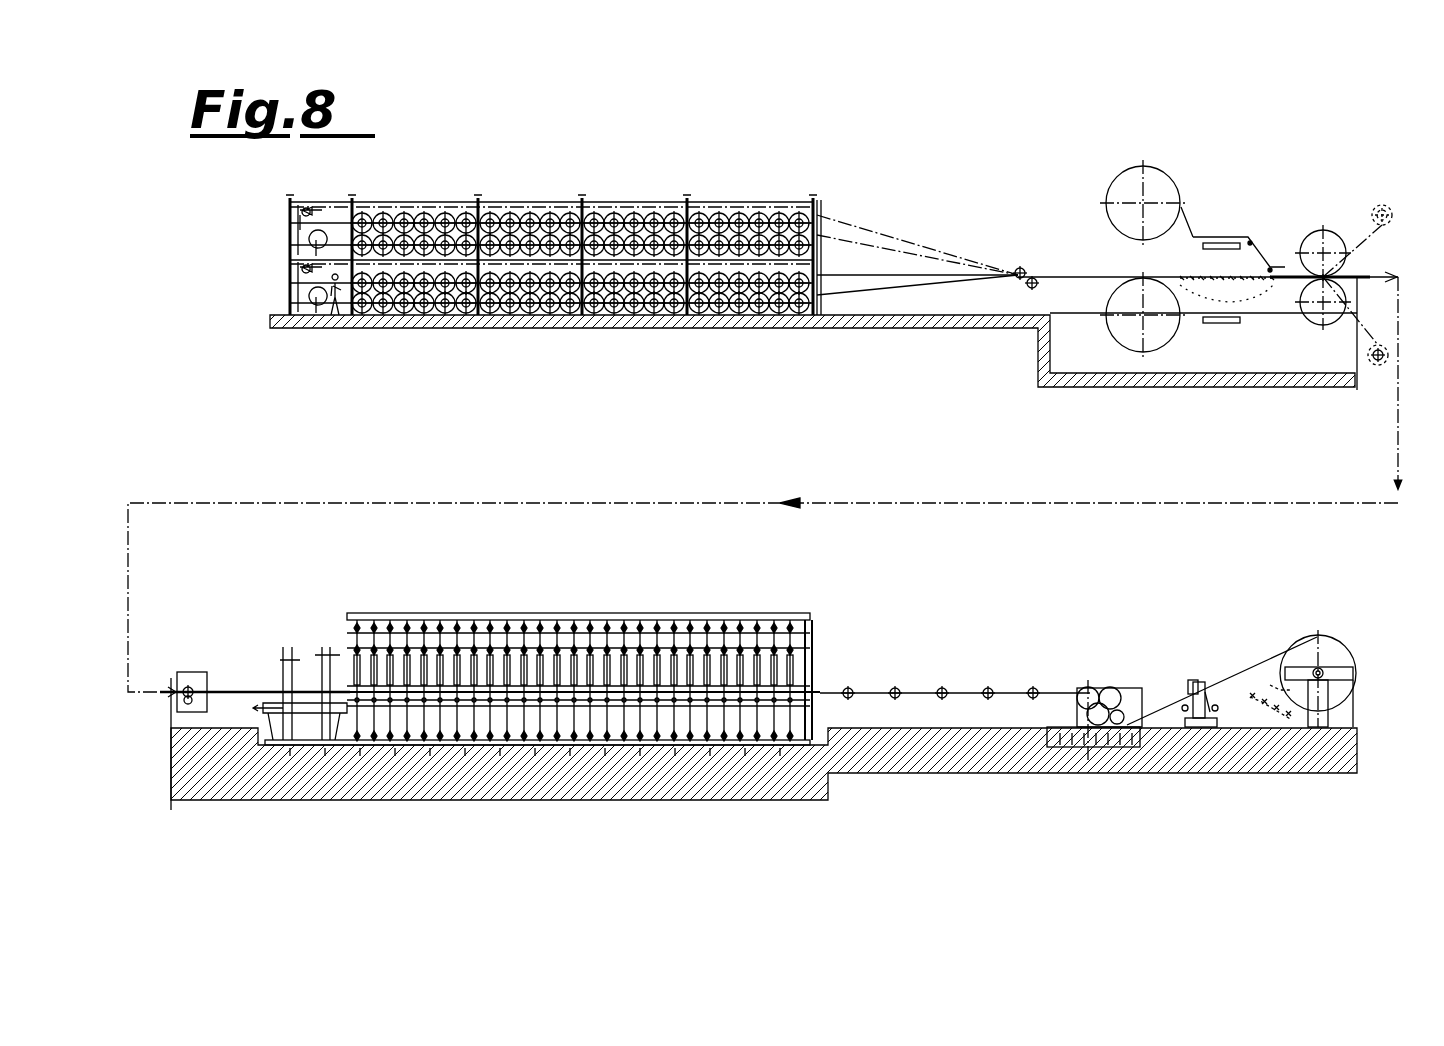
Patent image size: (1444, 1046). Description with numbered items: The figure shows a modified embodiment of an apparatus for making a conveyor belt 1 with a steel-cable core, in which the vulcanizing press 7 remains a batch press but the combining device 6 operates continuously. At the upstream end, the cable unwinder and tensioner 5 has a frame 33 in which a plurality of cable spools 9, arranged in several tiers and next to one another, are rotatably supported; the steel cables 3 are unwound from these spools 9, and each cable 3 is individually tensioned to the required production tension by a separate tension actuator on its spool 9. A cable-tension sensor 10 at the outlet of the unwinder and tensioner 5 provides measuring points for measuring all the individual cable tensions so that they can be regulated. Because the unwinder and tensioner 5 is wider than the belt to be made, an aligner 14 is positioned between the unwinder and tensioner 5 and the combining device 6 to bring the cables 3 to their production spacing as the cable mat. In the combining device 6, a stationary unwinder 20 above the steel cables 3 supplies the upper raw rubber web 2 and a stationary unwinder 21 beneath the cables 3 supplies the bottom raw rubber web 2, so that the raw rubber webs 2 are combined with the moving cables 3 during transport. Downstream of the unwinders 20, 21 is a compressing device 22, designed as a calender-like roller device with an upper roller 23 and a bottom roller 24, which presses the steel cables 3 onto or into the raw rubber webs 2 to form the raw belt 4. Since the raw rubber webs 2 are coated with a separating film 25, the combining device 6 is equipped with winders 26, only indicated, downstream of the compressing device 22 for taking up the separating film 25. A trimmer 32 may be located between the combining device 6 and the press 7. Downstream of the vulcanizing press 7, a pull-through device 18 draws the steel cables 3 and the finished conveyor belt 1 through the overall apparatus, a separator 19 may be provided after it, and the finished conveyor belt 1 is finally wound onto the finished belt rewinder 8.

The conveyor belt 1 is at (1240, 665).
The raw rubber web 2 is at (1193, 237).
The steel cable 3 is at (902, 278).
The raw belt 4 is at (232, 686).
The cable unwinder and tensioner 5 is at (672, 155).
The combining device 6 is at (1268, 175).
The vulcanizing press 7 is at (597, 588).
The finished belt rewinder 8 is at (1350, 640).
The cable spool 9 is at (525, 222).
The cable-tension sensor 10 is at (818, 209).
The aligner 14 is at (1032, 265).
The pull-through device 18 is at (1103, 680).
The separator 19 is at (1195, 672).
The stationary unwinder 20 is at (1125, 165).
The stationary unwinder 21 is at (1128, 355).
The compressing device 22 is at (1322, 220).
The upper roller 23 is at (1309, 240).
The bottom roller 24 is at (1315, 315).
The separating film 25 is at (1378, 345).
The winder 26 is at (1377, 200).
The trimmer 32 is at (188, 660).
The frame 33 is at (763, 205).